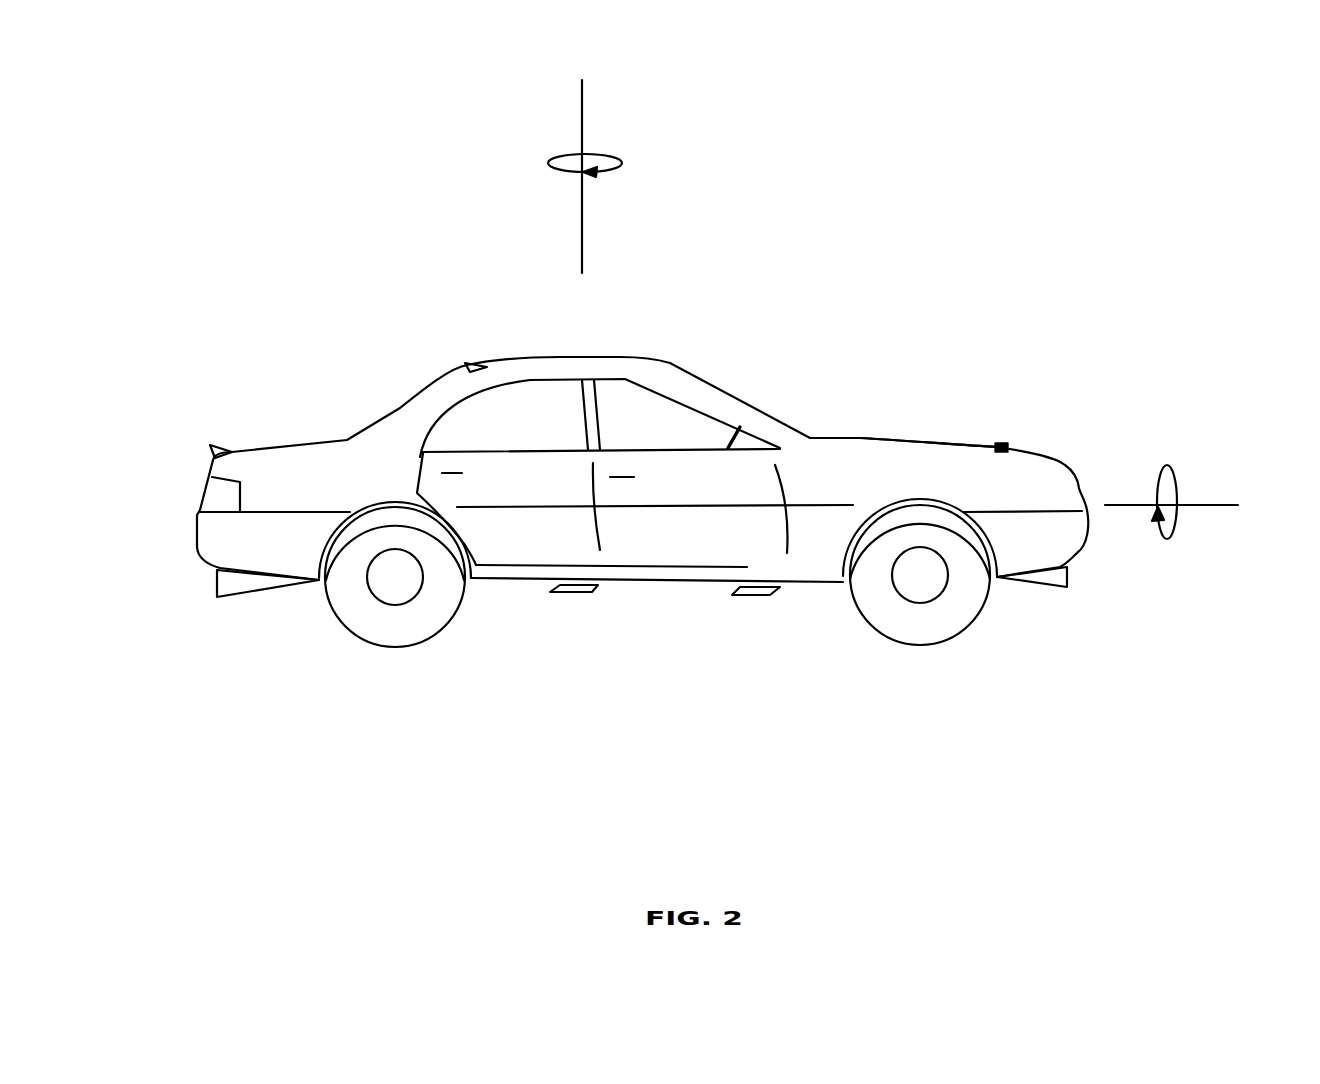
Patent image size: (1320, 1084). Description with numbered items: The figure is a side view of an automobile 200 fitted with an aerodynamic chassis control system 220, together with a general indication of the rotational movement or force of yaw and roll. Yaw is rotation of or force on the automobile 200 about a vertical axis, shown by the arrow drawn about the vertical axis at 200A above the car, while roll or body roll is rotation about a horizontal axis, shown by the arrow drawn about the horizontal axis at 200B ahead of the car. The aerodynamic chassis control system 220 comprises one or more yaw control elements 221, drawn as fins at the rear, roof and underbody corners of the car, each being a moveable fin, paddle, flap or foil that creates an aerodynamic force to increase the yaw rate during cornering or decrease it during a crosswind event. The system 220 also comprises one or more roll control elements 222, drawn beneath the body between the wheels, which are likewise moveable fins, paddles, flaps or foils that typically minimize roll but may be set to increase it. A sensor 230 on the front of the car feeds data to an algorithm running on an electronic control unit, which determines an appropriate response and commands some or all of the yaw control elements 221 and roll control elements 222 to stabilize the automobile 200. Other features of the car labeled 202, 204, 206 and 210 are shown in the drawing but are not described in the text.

The automobile 200 is at (1059, 157).
The vertical axis 200A is at (606, 143).
The horizontal axis 200B is at (1175, 543).
The vehicle body 202 is at (798, 585).
The hood 204 is at (860, 438).
The wheels 206 is at (390, 637).
The side mirror 210 is at (727, 428).
The aerodynamic chassis control system 220 is at (1088, 377).
The yaw control element 221 is at (465, 366).
The roll control element 222 is at (568, 595).
The sensor 230 is at (1001, 443).